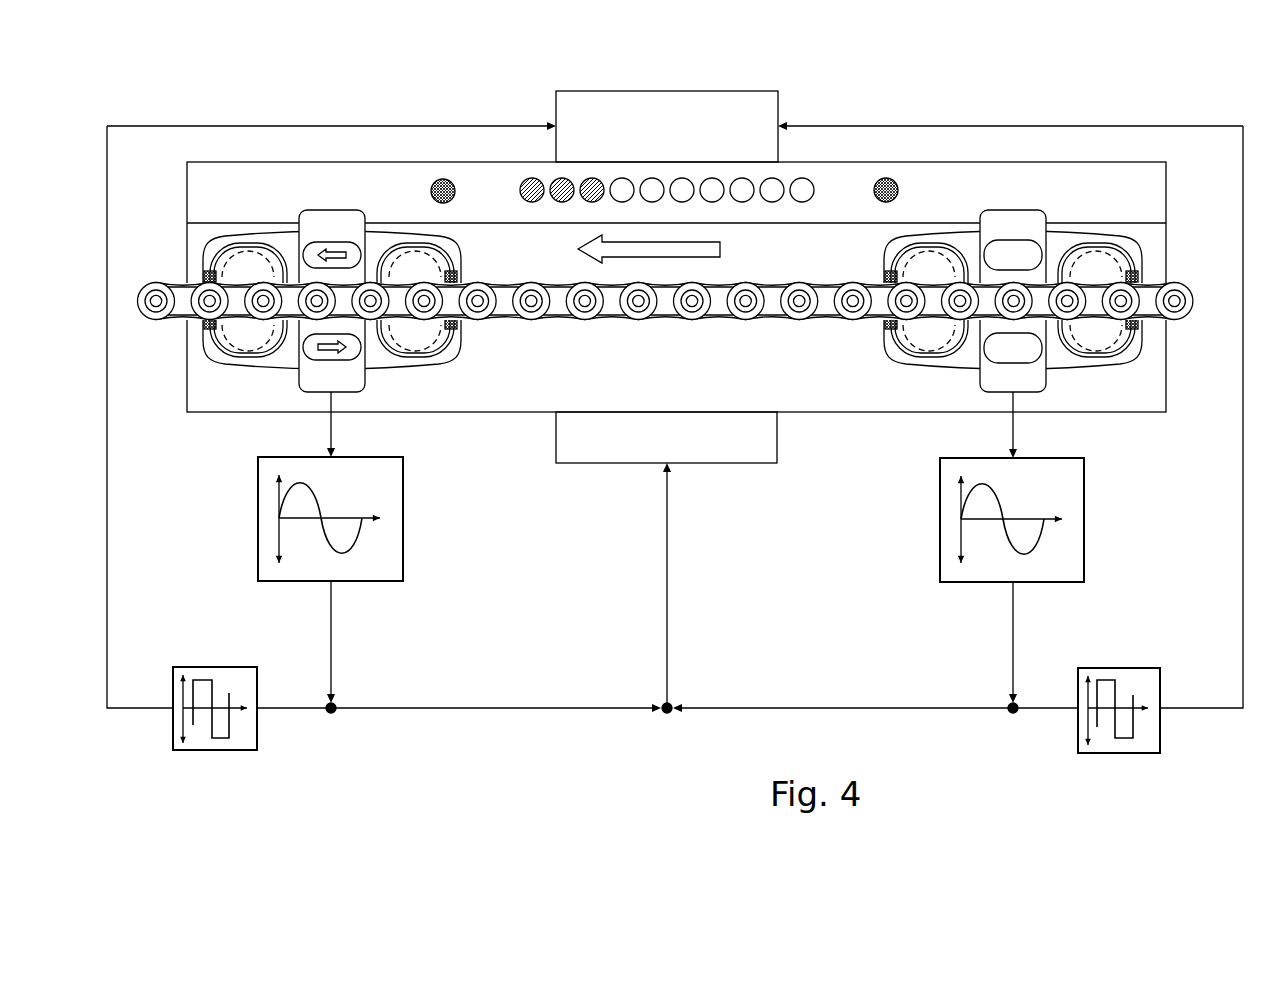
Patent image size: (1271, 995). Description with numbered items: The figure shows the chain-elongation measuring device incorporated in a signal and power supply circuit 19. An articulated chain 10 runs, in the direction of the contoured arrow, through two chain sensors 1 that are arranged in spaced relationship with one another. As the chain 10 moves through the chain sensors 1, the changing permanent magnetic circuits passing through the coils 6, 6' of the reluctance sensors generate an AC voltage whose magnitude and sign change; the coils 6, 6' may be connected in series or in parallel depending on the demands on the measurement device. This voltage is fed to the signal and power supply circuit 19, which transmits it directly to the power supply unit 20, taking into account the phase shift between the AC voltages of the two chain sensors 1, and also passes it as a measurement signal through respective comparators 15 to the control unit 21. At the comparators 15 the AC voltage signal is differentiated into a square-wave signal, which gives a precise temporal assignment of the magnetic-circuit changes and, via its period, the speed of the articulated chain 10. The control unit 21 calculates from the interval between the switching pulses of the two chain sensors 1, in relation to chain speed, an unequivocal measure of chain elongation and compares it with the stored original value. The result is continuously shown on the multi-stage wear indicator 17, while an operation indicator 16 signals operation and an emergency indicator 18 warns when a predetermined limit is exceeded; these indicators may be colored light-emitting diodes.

The chain sensor 1 is at (188, 266).
The coil 6 is at (695, 308).
The coil 6' is at (666, 265).
The articulated chain 10 is at (1196, 322).
The comparator 15 is at (257, 745).
The operation indicator 16 is at (430, 192).
The multi-stage wear indicator 17 is at (575, 176).
The emergency indicator 18 is at (898, 190).
The signal and power supply circuit 19 is at (1243, 485).
The power supply unit 20 is at (735, 453).
The control unit 21 is at (735, 107).